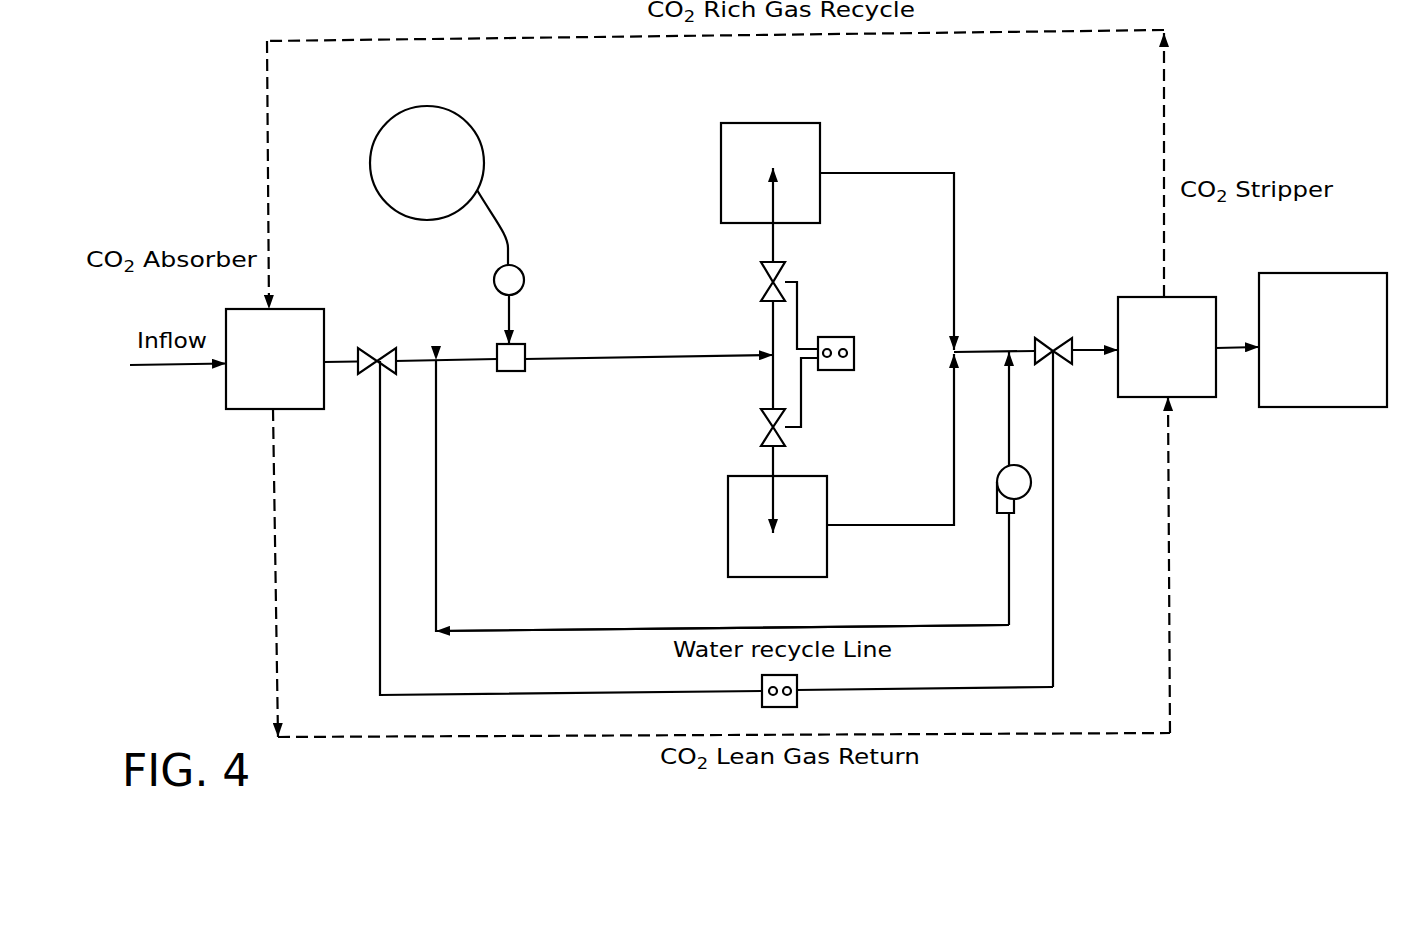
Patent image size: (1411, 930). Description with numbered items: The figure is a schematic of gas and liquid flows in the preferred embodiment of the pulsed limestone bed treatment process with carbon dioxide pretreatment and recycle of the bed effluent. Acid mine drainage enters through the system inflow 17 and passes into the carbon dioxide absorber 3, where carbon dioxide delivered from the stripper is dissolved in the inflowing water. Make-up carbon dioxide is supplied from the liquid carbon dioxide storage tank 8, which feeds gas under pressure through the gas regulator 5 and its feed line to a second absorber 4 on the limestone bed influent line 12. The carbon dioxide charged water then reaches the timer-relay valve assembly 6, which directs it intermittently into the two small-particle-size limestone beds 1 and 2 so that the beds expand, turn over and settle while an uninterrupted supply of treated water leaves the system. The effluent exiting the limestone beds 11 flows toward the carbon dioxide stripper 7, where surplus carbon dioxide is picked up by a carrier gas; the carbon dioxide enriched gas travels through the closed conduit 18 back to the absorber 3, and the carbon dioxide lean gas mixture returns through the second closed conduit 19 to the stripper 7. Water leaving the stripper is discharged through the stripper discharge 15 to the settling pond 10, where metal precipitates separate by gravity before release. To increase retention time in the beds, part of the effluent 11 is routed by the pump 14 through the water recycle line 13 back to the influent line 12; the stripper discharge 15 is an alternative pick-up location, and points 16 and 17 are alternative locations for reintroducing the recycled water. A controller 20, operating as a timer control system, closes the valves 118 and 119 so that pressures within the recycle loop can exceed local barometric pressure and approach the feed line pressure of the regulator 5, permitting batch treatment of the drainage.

The limestone bed 1 is at (721, 162).
The limestone bed 2 is at (728, 512).
The carbon dioxide absorber 3 is at (243, 410).
The absorber 4 is at (527, 347).
The gas regulator 5 is at (525, 280).
The timer-relay valve assembly 6 is at (863, 328).
The carbon dioxide stripper 7 is at (1120, 297).
The liquid carbon dioxide storage tank 8 is at (480, 140).
The settling pond 10 is at (1313, 273).
The limestone bed effluent 11 is at (973, 350).
The limestone bed influent line 12 is at (472, 358).
The water recycle line 13 is at (603, 628).
The pump 14 is at (998, 470).
The carbon dioxide stripper discharge 15 is at (1228, 345).
The recycle reintroduction point 16 is at (640, 357).
The system inflow 17 is at (170, 365).
The closed conduit 18 is at (1163, 167).
The second closed conduit 19 is at (275, 613).
The controller 20 is at (797, 700).
The valve 118 is at (358, 362).
The valve 119 is at (1045, 343).